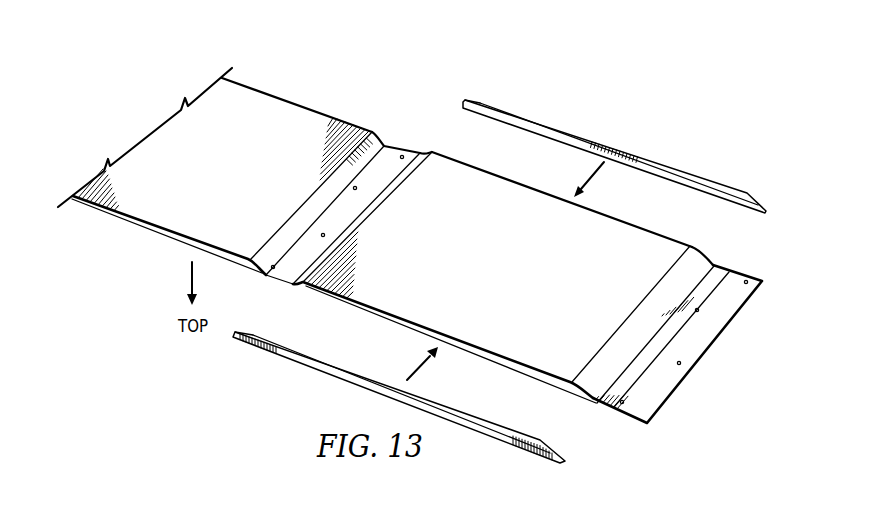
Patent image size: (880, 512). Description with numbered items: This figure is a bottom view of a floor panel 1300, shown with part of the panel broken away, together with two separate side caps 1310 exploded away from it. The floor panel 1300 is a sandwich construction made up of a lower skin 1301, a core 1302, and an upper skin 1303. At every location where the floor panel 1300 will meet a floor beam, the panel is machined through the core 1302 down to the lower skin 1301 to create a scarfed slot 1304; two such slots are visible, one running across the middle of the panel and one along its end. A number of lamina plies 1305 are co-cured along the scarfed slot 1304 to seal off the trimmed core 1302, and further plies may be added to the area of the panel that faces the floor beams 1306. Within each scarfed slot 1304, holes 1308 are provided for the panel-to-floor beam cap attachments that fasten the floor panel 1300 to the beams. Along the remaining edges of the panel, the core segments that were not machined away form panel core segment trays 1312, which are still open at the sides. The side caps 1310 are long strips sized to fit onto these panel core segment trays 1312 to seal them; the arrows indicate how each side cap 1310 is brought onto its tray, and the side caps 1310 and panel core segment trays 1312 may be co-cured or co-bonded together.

The floor panel 1300 is at (516, 72).
The lower skin 1301 is at (170, 204).
The core 1302 is at (125, 214).
The upper skin 1303 is at (160, 235).
The scarfed slot 1304 is at (420, 148).
The lamina plies 1305 is at (277, 244).
The floor beams 1306 is at (287, 269).
The holes 1308 is at (323, 231).
The side caps 1310 is at (667, 164).
The panel core segment trays 1312 is at (392, 316).